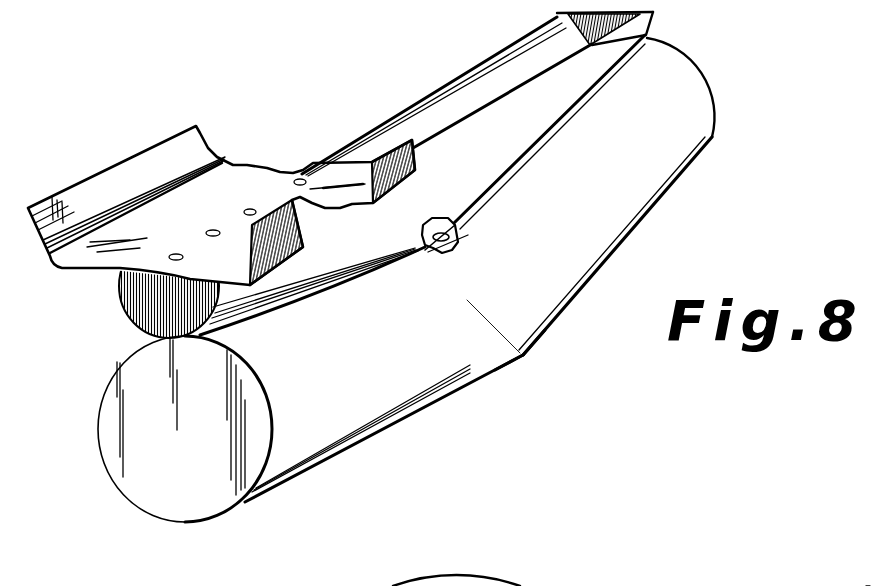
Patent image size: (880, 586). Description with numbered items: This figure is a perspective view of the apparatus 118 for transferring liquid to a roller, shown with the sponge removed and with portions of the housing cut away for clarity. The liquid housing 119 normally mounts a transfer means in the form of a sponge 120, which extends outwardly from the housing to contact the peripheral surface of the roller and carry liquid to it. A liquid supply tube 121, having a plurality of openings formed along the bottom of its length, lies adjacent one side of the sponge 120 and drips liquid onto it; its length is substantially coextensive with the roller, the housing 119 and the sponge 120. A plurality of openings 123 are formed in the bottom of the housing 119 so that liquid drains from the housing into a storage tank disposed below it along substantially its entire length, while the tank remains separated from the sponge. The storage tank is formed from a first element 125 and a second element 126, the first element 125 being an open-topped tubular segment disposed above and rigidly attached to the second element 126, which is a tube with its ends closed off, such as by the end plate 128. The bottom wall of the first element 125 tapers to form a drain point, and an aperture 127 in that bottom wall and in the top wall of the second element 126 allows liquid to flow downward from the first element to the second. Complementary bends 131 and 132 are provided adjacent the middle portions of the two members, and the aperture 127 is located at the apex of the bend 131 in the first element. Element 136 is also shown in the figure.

The apparatus 118 is at (184, 527).
The liquid housing 119 is at (300, 250).
The sponge 120 is at (522, 575).
The liquid supply tube 121 is at (699, 575).
The openings 123 is at (244, 211).
The first element 125 is at (516, 160).
The second element 126 is at (605, 255).
The aperture 127 is at (460, 238).
The end plate 128 is at (200, 473).
The bend 131 is at (433, 263).
The bend 132 is at (537, 360).
The support member 136 is at (867, 585).